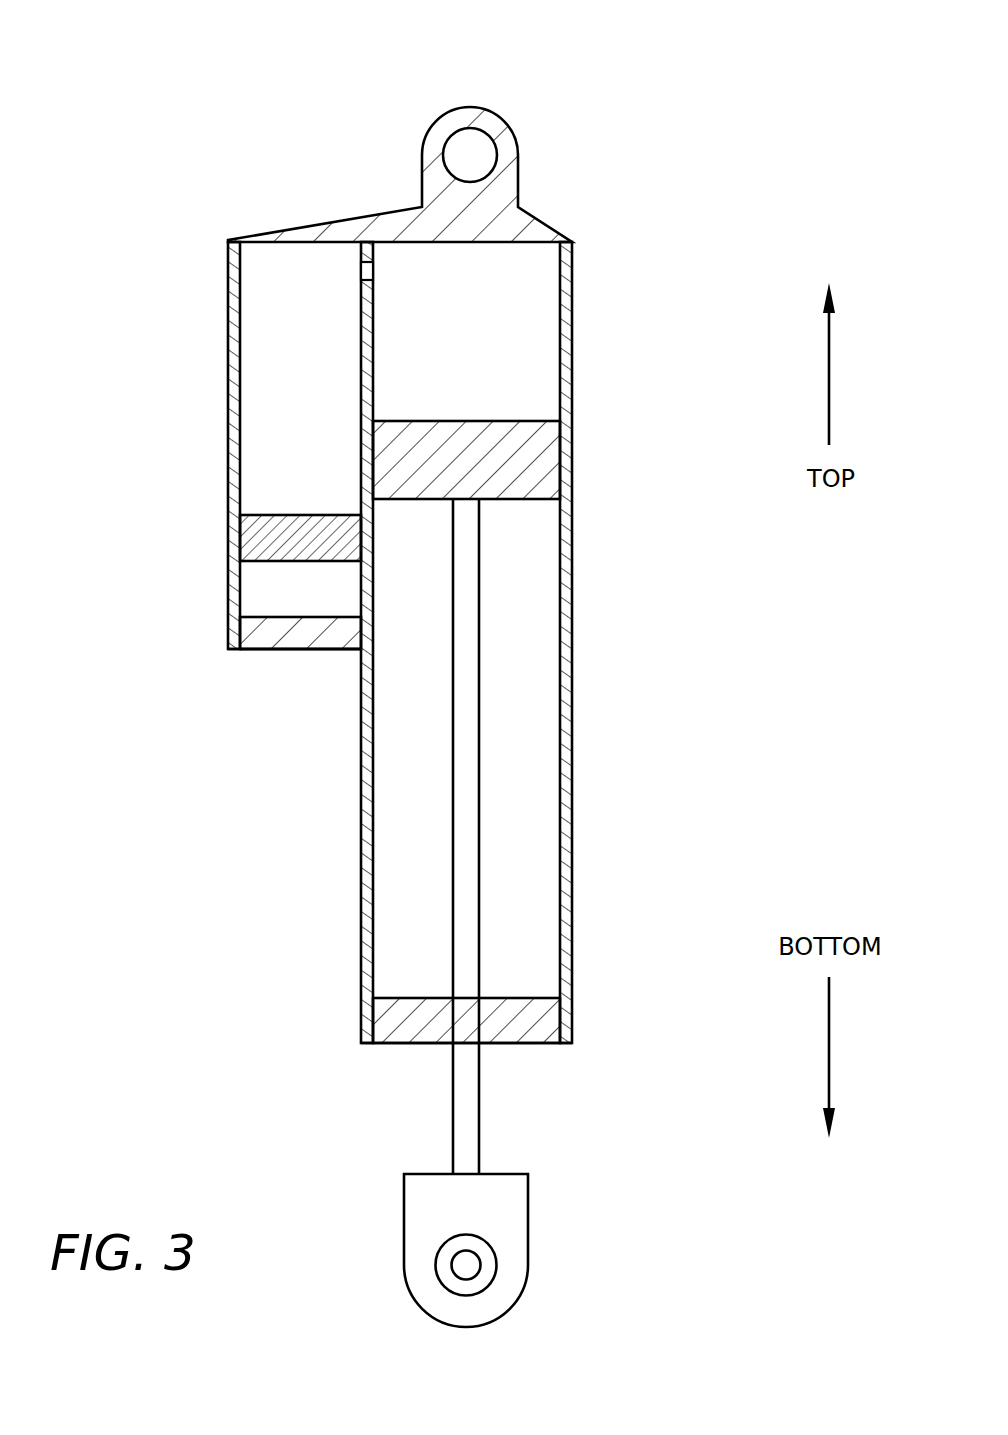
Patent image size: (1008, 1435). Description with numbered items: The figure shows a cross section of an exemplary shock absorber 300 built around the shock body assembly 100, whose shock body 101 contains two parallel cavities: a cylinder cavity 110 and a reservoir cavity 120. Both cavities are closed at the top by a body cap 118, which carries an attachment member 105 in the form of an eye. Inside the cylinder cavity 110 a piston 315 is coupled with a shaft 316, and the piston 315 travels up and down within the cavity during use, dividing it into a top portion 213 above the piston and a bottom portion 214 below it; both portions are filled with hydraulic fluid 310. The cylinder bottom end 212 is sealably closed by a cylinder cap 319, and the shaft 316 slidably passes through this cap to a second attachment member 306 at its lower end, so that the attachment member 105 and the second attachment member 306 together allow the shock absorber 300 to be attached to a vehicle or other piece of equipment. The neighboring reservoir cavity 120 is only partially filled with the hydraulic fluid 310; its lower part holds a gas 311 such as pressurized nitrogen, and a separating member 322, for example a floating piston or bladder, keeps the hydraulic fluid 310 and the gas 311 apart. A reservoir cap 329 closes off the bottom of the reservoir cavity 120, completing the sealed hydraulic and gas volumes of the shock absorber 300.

The shock absorber 300 is at (638, 135).
The shock body assembly 100 is at (580, 239).
The shock body 101 is at (584, 553).
The attachment member 105 is at (470, 107).
The body cap 118 is at (532, 240).
The top portion 213 is at (402, 295).
The reservoir cavity 120 is at (272, 400).
The hydraulic fluid 310 is at (293, 295).
The piston 315 is at (545, 457).
The shaft 316 is at (480, 675).
The separating member 322 is at (250, 548).
The gas 311 is at (260, 587).
The reservoir cap 329 is at (295, 650).
The cylinder cavity 110 is at (530, 700).
The bottom portion 214 is at (525, 977).
The cylinder cap 319 is at (398, 1043).
The cylinder bottom end 212 is at (588, 1042).
The second attachment member 306 is at (528, 1218).